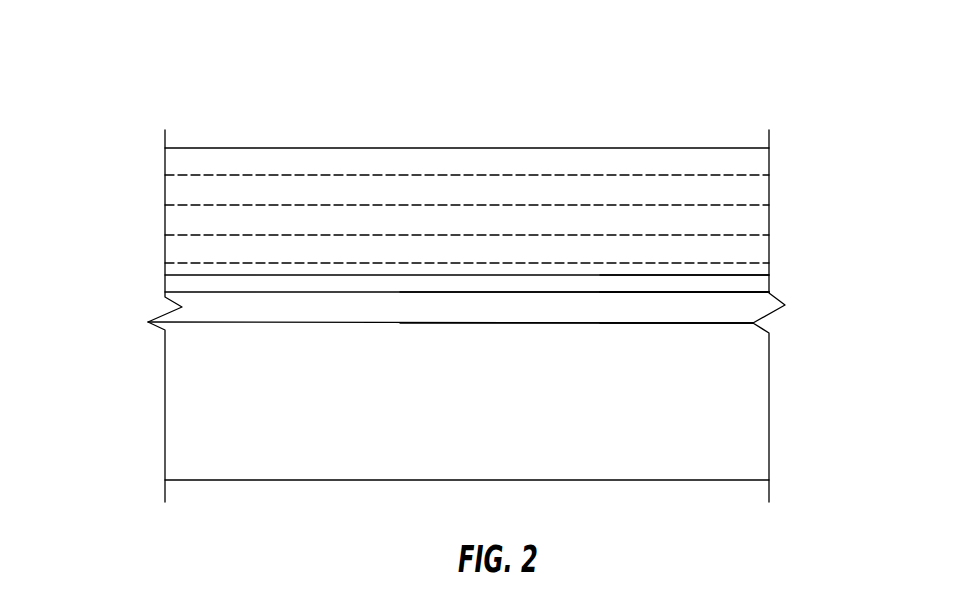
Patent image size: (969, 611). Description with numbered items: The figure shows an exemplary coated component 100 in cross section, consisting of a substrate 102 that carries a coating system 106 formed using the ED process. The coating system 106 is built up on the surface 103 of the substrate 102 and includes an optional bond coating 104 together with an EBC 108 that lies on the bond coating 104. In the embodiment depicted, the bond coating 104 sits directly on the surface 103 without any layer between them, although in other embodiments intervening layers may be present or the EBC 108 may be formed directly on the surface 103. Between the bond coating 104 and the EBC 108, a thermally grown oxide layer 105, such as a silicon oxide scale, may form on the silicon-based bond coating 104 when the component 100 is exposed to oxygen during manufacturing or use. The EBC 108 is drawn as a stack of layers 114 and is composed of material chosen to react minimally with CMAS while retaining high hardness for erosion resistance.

The coated component 100 is at (85, 81).
The substrate 102 is at (305, 432).
The surface 103 is at (545, 321).
The bond coating 104 is at (743, 313).
The thermally grown oxide layer 105 is at (760, 283).
The coating system 106 is at (144, 222).
The EBC 108 is at (538, 160).
The intermediate layers 114 is at (717, 187).